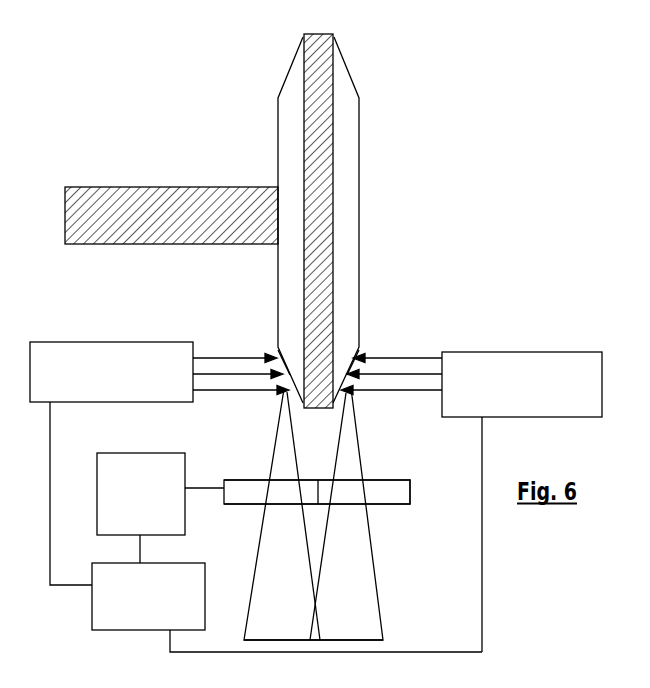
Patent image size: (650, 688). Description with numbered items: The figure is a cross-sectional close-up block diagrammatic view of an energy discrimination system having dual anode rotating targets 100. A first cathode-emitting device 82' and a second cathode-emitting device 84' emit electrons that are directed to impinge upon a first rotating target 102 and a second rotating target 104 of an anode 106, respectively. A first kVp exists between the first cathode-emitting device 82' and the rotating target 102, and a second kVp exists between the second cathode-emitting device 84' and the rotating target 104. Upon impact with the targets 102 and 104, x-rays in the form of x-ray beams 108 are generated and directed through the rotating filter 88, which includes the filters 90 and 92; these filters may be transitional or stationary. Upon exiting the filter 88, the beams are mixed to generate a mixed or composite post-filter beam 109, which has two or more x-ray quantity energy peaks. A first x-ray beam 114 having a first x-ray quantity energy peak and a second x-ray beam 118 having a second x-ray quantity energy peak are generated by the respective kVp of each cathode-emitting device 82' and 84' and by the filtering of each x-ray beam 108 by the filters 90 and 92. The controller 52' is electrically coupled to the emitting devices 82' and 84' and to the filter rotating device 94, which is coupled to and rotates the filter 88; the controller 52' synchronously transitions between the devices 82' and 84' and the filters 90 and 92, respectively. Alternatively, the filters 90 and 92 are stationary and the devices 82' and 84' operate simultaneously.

The dual anode rotating targets 100 is at (341, 60).
The anode 106 is at (360, 143).
The first rotating target 102 is at (276, 350).
The second rotating target 104 is at (361, 350).
The first cathode-emitting device 82' is at (159, 450).
The second cathode-emitting device 84' is at (471, 488).
The filter rotating device 94 is at (152, 453).
The controller 52' is at (287, 595).
The rotating filter 88 is at (410, 488).
The first filter 90 is at (224, 480).
The second filter 92 is at (383, 480).
The x-ray beams 108 is at (341, 448).
The first x-ray beam 114 is at (263, 513).
The second x-ray beam 118 is at (370, 519).
The mixed or composite post-filter beam 109 is at (360, 639).